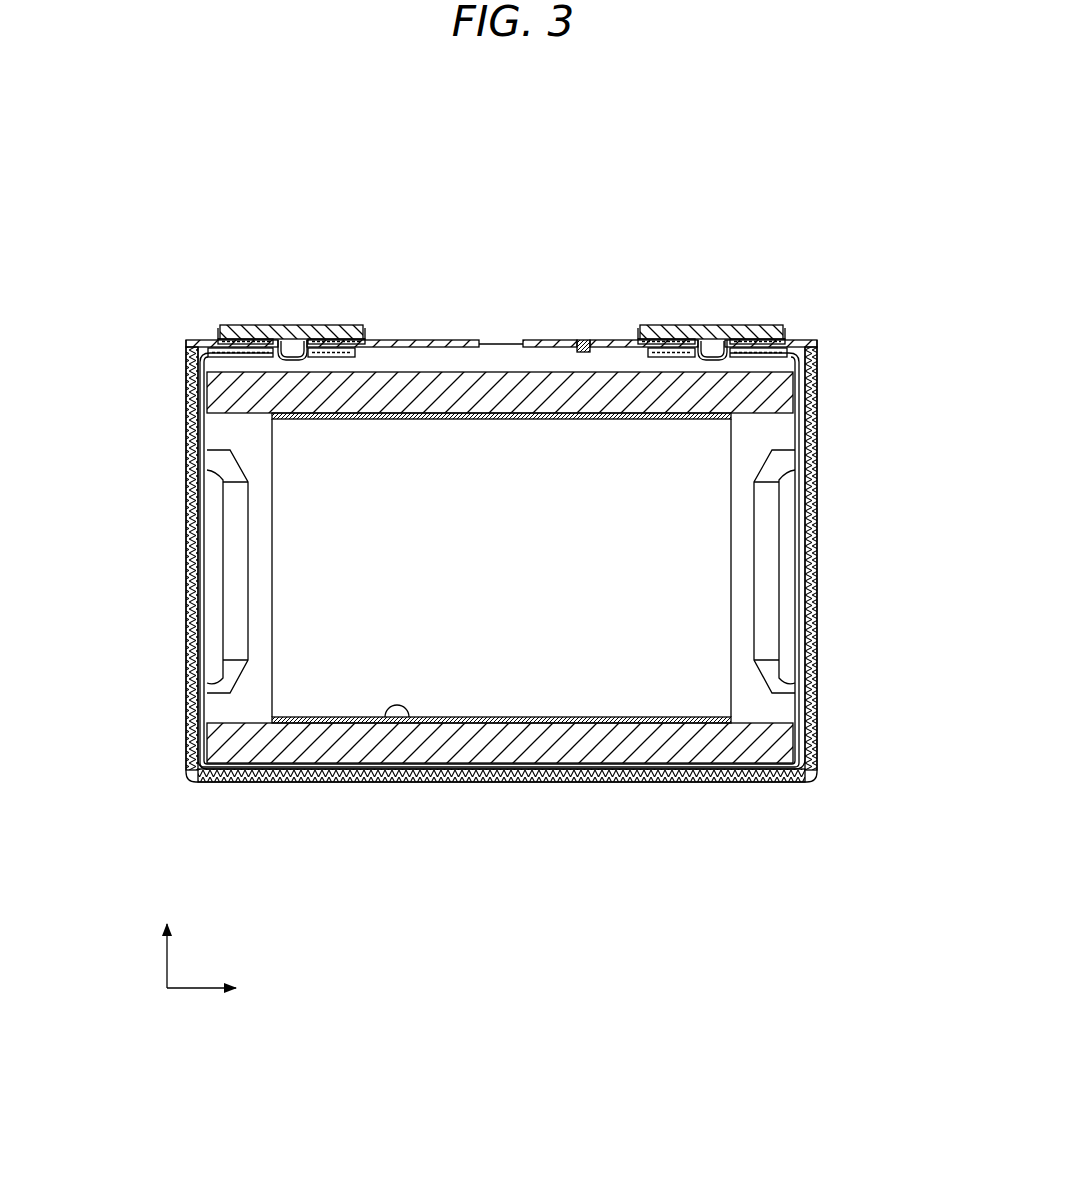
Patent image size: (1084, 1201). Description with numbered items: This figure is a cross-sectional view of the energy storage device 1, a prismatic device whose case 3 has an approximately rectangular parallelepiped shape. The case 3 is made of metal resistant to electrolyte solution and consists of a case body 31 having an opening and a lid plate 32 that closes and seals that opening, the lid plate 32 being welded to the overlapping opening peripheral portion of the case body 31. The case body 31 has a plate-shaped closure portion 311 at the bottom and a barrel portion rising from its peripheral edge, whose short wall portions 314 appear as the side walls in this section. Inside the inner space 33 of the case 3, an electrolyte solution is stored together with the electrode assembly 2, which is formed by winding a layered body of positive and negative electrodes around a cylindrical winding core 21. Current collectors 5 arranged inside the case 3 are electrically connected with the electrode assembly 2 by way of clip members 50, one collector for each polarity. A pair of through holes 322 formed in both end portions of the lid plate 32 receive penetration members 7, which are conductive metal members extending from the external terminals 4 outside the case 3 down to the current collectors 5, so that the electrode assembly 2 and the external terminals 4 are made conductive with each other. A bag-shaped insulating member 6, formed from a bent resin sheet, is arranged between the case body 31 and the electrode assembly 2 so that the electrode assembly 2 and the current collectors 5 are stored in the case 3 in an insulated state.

The energy storage device 1 is at (821, 198).
The electrode assembly 2 is at (496, 784).
The winding core 21 is at (408, 720).
The case 3 is at (922, 338).
The case body 31 is at (830, 393).
The closure portion 311 is at (596, 783).
The short wall portions 314 is at (188, 712).
The lid plate 32 is at (812, 336).
The through holes 322 is at (292, 352).
The inner space 33 is at (510, 350).
The external terminals 4 is at (287, 323).
The current collectors 5 is at (215, 618).
The clip members 50 is at (240, 535).
The insulating member 6 is at (793, 433).
The penetration members 7 is at (242, 325).